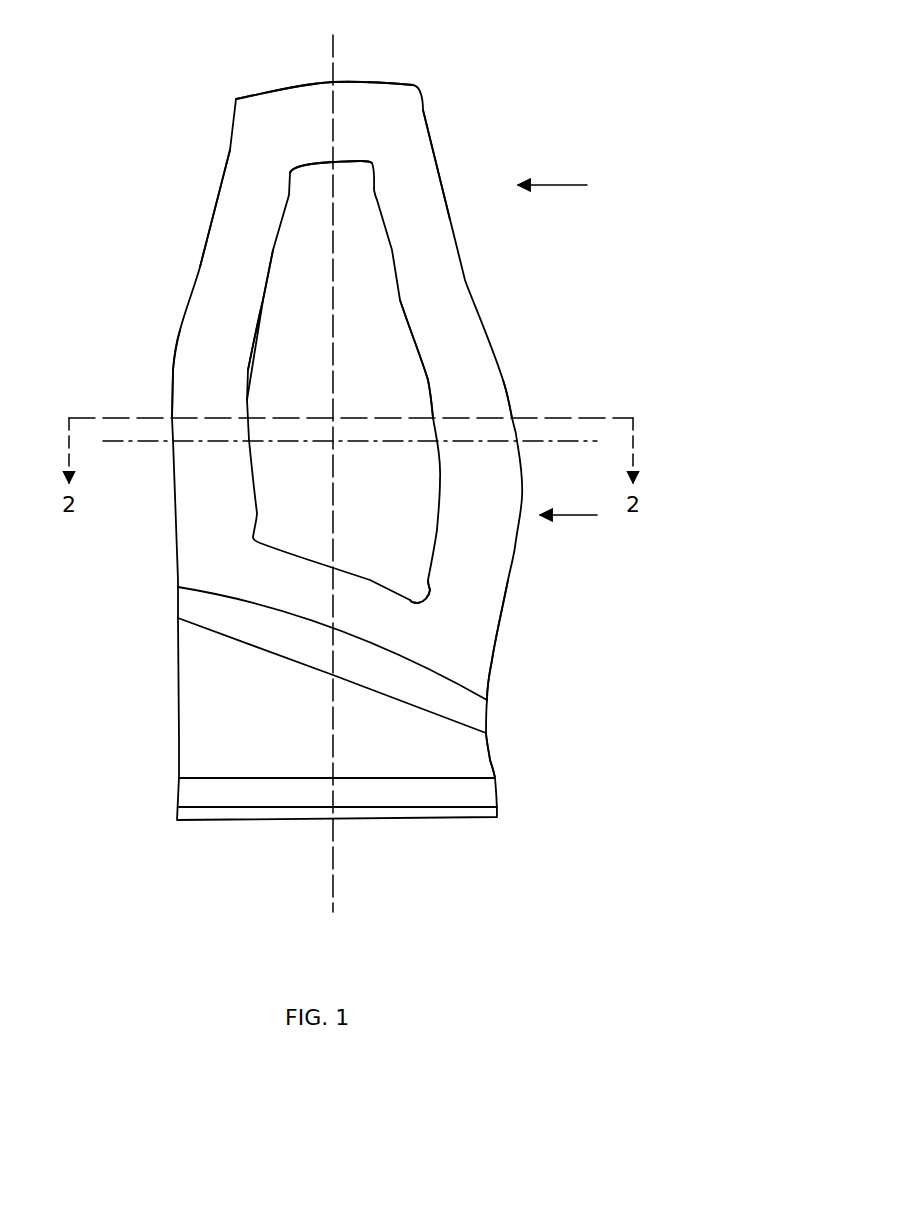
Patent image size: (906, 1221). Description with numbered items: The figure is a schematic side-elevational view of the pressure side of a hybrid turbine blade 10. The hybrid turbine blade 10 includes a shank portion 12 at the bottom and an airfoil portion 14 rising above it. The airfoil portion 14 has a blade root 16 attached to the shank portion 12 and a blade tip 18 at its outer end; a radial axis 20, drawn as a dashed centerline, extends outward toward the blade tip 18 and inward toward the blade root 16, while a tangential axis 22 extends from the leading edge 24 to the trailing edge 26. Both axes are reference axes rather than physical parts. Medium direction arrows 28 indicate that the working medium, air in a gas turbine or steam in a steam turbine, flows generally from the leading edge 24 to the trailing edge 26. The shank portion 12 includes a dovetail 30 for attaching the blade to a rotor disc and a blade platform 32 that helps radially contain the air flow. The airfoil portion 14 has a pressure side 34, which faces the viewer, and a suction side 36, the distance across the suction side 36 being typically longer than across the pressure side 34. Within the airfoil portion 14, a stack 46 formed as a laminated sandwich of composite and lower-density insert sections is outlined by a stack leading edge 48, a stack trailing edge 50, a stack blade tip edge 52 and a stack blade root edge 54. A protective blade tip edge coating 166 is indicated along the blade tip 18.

The hybrid turbine blade 10 is at (497, 50).
The shank portion 12 is at (482, 762).
The airfoil portion 14 is at (510, 333).
The blade root 16 is at (475, 688).
The blade tip 18 is at (363, 82).
The radial axis 20 is at (335, 880).
The tangential axis 22 is at (577, 441).
The leading edge 24 is at (512, 400).
The trailing edge 26 is at (173, 372).
The medium direction arrows 28 is at (565, 190).
The dovetail 30 is at (188, 797).
The blade platform 32 is at (193, 607).
The pressure side 34 is at (422, 187).
The suction side 36 is at (233, 200).
The stack 46 is at (383, 302).
The stack leading edge 48 is at (428, 390).
The stack trailing edge 50 is at (248, 372).
The stack blade tip edge 52 is at (350, 158).
The stack blade root edge 54 is at (398, 597).
The protective blade tip edge coating 166 is at (282, 107).